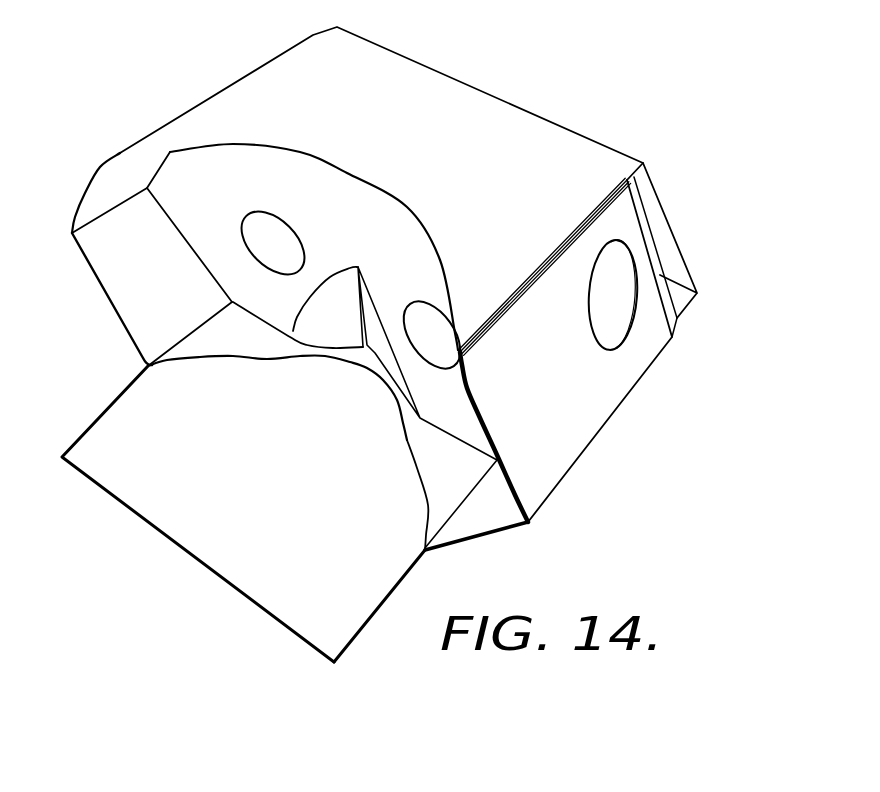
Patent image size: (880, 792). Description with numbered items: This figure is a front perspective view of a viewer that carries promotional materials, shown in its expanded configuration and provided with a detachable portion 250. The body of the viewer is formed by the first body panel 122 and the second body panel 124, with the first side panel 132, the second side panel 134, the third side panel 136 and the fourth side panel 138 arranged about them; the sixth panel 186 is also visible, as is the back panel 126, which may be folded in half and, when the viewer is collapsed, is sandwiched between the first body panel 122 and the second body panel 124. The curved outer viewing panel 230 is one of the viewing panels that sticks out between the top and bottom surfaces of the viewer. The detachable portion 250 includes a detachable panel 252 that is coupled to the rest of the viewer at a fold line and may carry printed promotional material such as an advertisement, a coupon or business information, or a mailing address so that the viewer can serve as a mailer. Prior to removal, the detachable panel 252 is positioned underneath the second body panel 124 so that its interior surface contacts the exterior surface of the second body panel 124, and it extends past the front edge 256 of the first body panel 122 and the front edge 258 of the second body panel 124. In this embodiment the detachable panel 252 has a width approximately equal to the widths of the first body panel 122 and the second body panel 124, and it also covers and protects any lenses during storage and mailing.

The first body panel 122 is at (449, 142).
The second body panel 124 is at (437, 477).
The back panel 126 is at (672, 230).
The first side panel 132 is at (613, 300).
The second side panel 134 is at (484, 519).
The third side panel 136 is at (164, 274).
The fourth side panel 138 is at (121, 172).
The sixth panel 186 is at (565, 394).
The outer viewing panel 230 is at (245, 198).
The detachable portion 250 is at (182, 560).
The detachable panel 252 is at (297, 486).
The front edge of the first body panel 256 is at (460, 338).
The front edge of the second body panel 258 is at (167, 368).